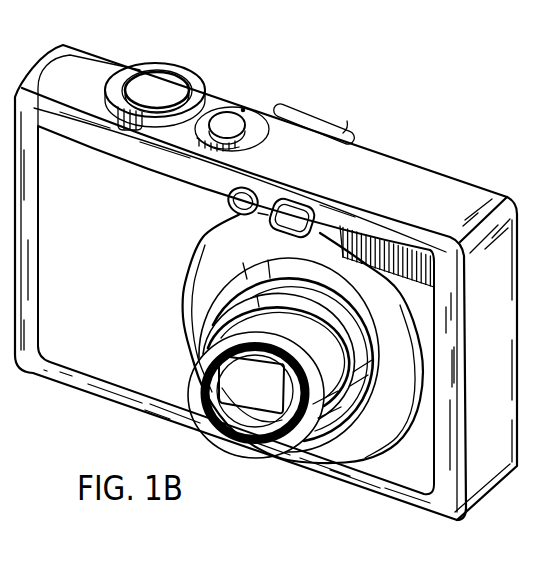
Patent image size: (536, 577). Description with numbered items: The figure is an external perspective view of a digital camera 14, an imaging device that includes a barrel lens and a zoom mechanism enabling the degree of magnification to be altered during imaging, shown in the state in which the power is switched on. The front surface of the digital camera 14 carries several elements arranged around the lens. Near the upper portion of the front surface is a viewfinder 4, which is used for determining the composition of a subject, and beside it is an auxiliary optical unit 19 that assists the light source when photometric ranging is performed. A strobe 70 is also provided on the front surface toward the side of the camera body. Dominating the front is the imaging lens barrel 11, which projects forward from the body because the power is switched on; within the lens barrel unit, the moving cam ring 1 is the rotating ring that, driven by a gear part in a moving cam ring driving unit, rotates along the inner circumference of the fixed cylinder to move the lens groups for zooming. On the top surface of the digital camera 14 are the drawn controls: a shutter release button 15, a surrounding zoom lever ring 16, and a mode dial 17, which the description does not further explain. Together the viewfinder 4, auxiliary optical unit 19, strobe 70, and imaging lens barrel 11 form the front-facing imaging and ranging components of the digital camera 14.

The moving cam ring 1 is at (375, 360).
The viewfinder 4 is at (302, 217).
The imaging lens barrel 11 is at (250, 430).
The digital camera 14 is at (102, 363).
The shutter release button 15 is at (157, 78).
The zoom lever ring 16 is at (195, 82).
The mode dial 17 is at (231, 120).
The auxiliary optical unit 19 is at (230, 206).
The strobe 70 is at (393, 243).